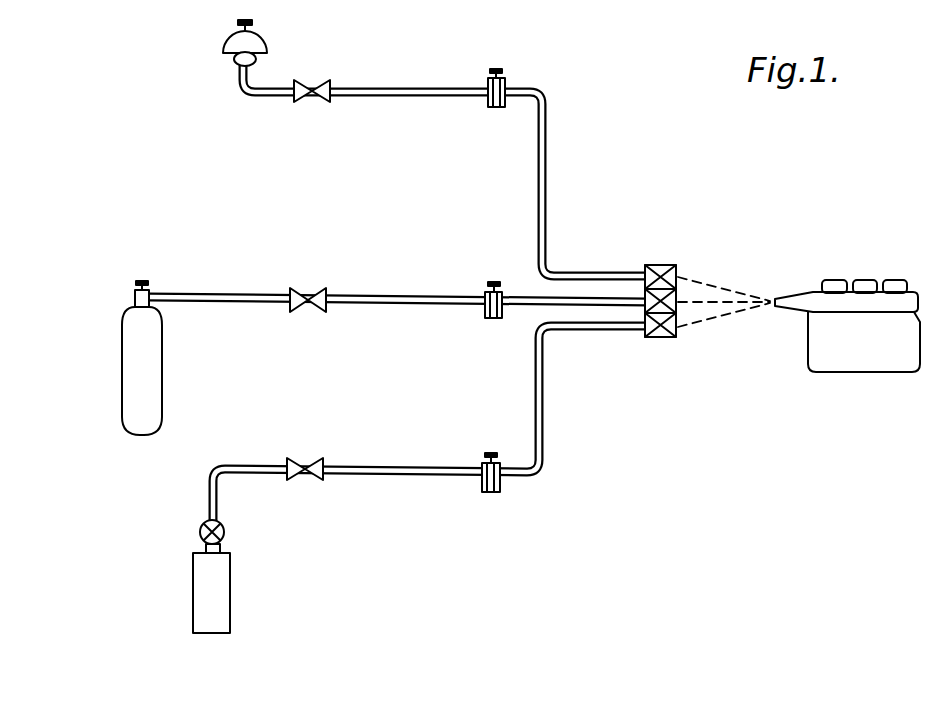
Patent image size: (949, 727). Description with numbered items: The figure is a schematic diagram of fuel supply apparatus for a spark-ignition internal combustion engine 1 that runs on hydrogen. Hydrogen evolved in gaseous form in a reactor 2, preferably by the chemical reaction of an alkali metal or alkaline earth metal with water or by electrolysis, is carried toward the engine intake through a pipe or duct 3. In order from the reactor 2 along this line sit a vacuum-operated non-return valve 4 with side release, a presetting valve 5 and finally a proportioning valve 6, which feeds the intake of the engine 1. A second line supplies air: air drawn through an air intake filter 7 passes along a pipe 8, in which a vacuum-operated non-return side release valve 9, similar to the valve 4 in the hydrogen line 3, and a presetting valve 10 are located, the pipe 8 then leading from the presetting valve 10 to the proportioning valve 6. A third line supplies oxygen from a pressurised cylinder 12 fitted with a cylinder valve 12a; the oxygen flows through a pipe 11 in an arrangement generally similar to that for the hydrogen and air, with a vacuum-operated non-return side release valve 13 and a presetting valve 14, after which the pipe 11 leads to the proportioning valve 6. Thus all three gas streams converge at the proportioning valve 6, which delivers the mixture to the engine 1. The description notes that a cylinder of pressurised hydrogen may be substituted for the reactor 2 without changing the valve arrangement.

The spark-ignition internal combustion engine 1 is at (900, 336).
The reactor 2 is at (203, 582).
The pipe or duct 3 is at (252, 466).
The vacuum-operated non-return valve 4 is at (296, 480).
The presetting valve 5 is at (500, 486).
The proportioning valve 6 is at (661, 266).
The air intake filter 7 is at (252, 42).
The pipe 8 is at (258, 93).
The vacuum-operated non-return side release valve 9 is at (326, 83).
The presetting valve 10 is at (503, 83).
The pipe 11 is at (233, 294).
The pressurised cylinder 12 is at (128, 376).
The cylinder valve 12a is at (140, 290).
The vacuum-operated non-return side release valve 13 is at (302, 290).
The presetting valve 14 is at (490, 292).